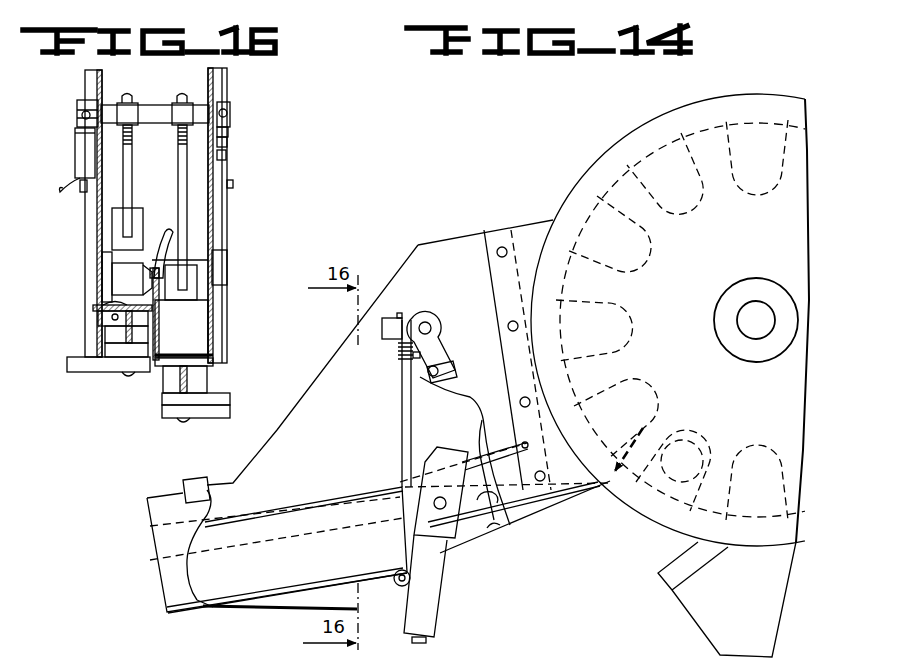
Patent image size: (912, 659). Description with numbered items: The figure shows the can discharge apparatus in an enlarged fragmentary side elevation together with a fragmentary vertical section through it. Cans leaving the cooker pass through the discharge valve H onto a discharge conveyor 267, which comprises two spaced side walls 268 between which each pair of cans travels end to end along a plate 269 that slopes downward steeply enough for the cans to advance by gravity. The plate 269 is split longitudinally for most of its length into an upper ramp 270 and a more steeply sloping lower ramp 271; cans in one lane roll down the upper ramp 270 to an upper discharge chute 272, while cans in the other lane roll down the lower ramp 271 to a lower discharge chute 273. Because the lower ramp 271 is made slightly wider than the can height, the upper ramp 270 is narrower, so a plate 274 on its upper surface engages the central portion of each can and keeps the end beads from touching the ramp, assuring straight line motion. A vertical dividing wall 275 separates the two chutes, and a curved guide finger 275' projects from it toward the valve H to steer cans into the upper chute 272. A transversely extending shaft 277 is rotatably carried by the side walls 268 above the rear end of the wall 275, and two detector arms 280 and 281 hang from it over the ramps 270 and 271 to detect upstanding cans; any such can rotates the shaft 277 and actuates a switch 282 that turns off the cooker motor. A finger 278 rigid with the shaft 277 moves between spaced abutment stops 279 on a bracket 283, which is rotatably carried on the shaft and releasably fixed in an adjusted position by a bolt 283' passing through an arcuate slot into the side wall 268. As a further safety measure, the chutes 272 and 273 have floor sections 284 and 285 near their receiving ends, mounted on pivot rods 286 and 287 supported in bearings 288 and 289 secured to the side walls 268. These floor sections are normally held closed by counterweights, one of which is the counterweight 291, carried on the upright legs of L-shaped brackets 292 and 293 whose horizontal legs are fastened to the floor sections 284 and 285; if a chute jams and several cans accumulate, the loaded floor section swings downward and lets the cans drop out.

In FIG. 14, the discharge valve H is at (594, 170).
In FIG. 16, the discharge conveyor 267 is at (228, 205).
In FIG. 14, the discharge conveyor 267 is at (152, 592).
In FIG. 16, the side walls 268 is at (100, 212).
In FIG. 14, the side walls 268 is at (470, 278).
In FIG. 16, the plate 269 is at (200, 263).
In FIG. 14, the plate 269 is at (648, 418).
In FIG. 16, the upper ramp 270 is at (105, 274).
In FIG. 14, the upper ramp 270 is at (522, 527).
In FIG. 16, the lower ramp 271 is at (205, 291).
In FIG. 14, the lower ramp 271 is at (512, 537).
In FIG. 16, the upper discharge chute 272 is at (100, 293).
In FIG. 14, the upper discharge chute 272 is at (200, 550).
In FIG. 16, the lower discharge chute 273 is at (195, 326).
In FIG. 14, the lower discharge chute 273 is at (210, 598).
In FIG. 16, the plate 274 is at (127, 270).
In FIG. 14, the plate 274 is at (540, 509).
In FIG. 16, the vertical dividing wall 275 is at (177, 314).
In FIG. 14, the vertical dividing wall 275 is at (287, 535).
In FIG. 16, the curved guide finger 275' is at (210, 245).
In FIG. 14, the curved guide finger 275' is at (465, 451).
In FIG. 16, the shaft 277 is at (152, 112).
In FIG. 14, the shaft 277 is at (436, 322).
In FIG. 16, the finger 278 is at (223, 131).
In FIG. 14, the finger 278 is at (433, 337).
In FIG. 16, the abutment stops 279 is at (223, 143).
In FIG. 14, the abutment stops 279 is at (413, 355).
In FIG. 16, the detector arm 280 is at (128, 162).
In FIG. 16, the detector arm 281 is at (178, 188).
In FIG. 14, the detector arm 281 is at (402, 441).
In FIG. 16, the switch 282 is at (86, 147).
In FIG. 16, the bracket 283 is at (252, 98).
In FIG. 14, the bracket 283 is at (459, 357).
In FIG. 16, the bolt 283' is at (259, 146).
In FIG. 14, the bolt 283' is at (461, 369).
In FIG. 16, the floor section 284 is at (112, 307).
In FIG. 14, the floor section 284 is at (297, 537).
In FIG. 16, the floor section 285 is at (172, 359).
In FIG. 14, the floor section 285 is at (283, 587).
In FIG. 16, the pivot rod 286 is at (100, 315).
In FIG. 16, the pivot rod 287 is at (205, 363).
In FIG. 14, the pivot rod 287 is at (402, 570).
In FIG. 16, the bearing 288 is at (100, 327).
In FIG. 16, the bearing 289 is at (210, 379).
In FIG. 14, the counterweight 291 is at (452, 528).
In FIG. 16, the L-shaped bracket 292 is at (92, 364).
In FIG. 16, the L-shaped bracket 293 is at (232, 401).
In FIG. 14, the L-shaped bracket 293 is at (430, 590).